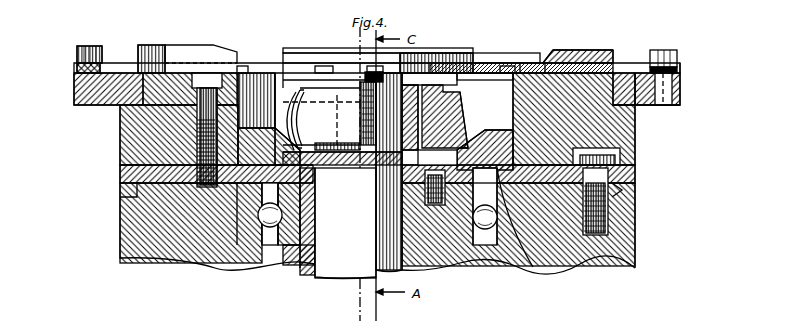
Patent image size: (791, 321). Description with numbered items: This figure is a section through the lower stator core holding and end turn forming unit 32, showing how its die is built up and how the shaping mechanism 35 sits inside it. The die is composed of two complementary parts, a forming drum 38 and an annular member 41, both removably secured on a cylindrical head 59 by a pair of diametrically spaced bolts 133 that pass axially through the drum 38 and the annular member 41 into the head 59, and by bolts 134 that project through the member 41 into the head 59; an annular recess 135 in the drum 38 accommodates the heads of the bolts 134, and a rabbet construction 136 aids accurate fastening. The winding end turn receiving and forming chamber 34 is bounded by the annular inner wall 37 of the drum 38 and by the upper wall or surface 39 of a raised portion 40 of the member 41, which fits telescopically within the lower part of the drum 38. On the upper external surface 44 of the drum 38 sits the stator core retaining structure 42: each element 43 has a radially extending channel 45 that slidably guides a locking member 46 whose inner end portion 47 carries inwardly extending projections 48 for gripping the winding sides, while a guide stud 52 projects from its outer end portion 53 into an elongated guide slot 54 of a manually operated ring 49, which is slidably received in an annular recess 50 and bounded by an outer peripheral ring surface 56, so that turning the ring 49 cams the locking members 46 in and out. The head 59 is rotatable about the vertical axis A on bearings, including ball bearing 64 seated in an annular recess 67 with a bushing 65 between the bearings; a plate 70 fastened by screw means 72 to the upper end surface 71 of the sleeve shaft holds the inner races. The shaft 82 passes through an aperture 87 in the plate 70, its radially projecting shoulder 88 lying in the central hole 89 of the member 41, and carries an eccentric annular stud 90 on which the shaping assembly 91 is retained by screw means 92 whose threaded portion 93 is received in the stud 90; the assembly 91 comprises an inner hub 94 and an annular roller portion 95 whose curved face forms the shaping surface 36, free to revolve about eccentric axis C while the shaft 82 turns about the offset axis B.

The lower stator core holding and end turn forming unit 32 is at (640, 147).
The winding end turn receiving and forming chamber 34 is at (487, 78).
The shaping mechanism 35 is at (318, 167).
The shaping surface 36 is at (467, 113).
The annular inner wall 37 is at (618, 73).
The forming drum 38 is at (603, 127).
The upper wall or surface 39 is at (490, 148).
The raised portion 40 is at (525, 195).
The annular member 41 is at (622, 190).
The stator core member holding or retaining structure 42 is at (608, 45).
The element 43 is at (187, 52).
The upper external surface 44 is at (163, 45).
The radially extending channel 45 is at (563, 63).
The locking member 46 is at (115, 63).
The inner end portion 47 is at (530, 72).
The inwardly extending projections 48 is at (244, 66).
The manually operated ring 49 is at (683, 85).
The annular recess 50 is at (645, 107).
The guide stud 52 is at (91, 46).
The outer end portion 53 is at (77, 64).
The elongated guide slot 54 is at (683, 103).
The outer peripheral ring surface 56 is at (74, 88).
The cylindrical head 59 is at (610, 240).
The ball bearing 64 is at (253, 230).
The bushing 65 is at (292, 265).
The annular recess 67 is at (237, 213).
The plate 70 is at (458, 266).
The upper end surface 71 is at (307, 180).
The screw means 72 is at (433, 205).
The shaft 82 is at (338, 263).
The aperture 87 is at (407, 182).
The radially projecting shoulder 88 is at (348, 168).
The central hole 89 is at (316, 135).
The annular stud 90 is at (358, 140).
The shaping assembly 91 is at (320, 119).
The screw means 92 is at (362, 77).
The threaded portion 93 is at (408, 84).
The inner hub 94 is at (440, 78).
The annular roller portion 95 is at (448, 102).
The bolts 133 is at (205, 133).
The bolts 134 is at (612, 205).
The annular recess 135 is at (622, 152).
The rabbet construction 136 is at (127, 197).